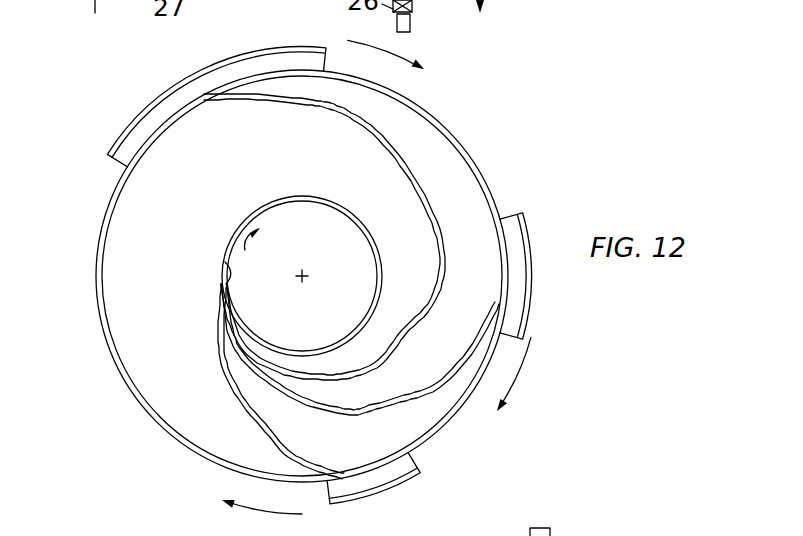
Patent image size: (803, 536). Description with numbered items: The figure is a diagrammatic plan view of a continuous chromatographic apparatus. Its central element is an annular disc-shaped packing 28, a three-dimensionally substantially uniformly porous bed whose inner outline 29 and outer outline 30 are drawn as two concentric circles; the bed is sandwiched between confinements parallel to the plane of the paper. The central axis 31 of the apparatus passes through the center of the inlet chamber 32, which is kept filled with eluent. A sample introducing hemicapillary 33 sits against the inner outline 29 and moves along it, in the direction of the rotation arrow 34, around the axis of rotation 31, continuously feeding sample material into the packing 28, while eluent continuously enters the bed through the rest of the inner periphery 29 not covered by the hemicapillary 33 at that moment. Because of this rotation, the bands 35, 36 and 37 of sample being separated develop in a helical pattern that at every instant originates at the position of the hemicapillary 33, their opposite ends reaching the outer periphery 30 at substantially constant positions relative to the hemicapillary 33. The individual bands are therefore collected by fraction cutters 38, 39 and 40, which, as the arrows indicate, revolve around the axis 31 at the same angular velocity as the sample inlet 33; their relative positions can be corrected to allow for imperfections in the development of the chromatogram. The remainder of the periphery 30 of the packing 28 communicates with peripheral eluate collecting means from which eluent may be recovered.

The annular disc-shaped packing 28 is at (110, 256).
The inner outline of the packing 29 is at (288, 187).
The outer outline of the packing 30 is at (123, 377).
The central axis 31 is at (317, 260).
The inlet chamber 32 is at (332, 216).
The sample introducing hemicapillary 33 is at (232, 283).
The direction of rotation arrow 34 is at (271, 238).
The band of sample 35 is at (307, 456).
The band of sample 36 is at (438, 382).
The band of sample 37 is at (410, 329).
The fraction cutter 38 is at (373, 484).
The fraction cutter 39 is at (527, 296).
The fraction cutter 40 is at (200, 80).